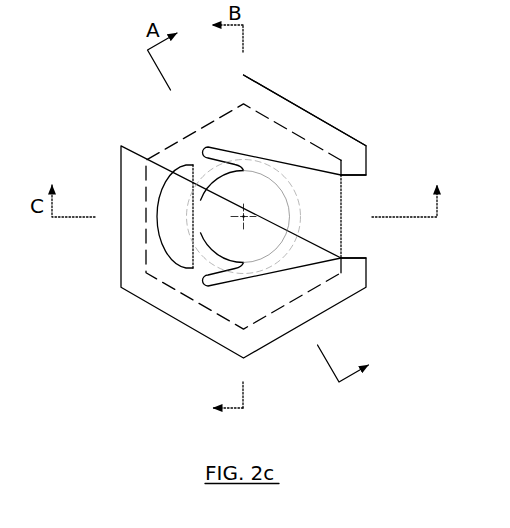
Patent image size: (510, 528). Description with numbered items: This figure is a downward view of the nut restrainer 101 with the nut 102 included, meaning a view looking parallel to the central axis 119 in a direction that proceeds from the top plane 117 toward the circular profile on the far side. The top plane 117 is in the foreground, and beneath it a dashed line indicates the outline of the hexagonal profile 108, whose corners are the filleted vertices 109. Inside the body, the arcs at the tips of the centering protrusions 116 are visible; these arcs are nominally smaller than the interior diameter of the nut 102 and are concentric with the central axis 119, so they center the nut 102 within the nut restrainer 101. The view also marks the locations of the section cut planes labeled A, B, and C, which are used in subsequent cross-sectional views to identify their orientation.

The nut restrainer 101 is at (163, 122).
The nut 102 is at (342, 232).
The hexagonal profile 108 is at (290, 123).
The filleted vertices 109 is at (248, 100).
The centering protrusions 116 is at (192, 247).
The top plane 117 is at (313, 170).
The central axis 119 is at (249, 228).